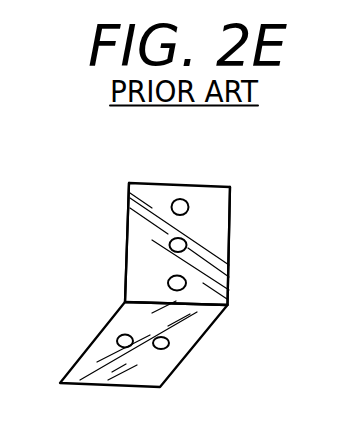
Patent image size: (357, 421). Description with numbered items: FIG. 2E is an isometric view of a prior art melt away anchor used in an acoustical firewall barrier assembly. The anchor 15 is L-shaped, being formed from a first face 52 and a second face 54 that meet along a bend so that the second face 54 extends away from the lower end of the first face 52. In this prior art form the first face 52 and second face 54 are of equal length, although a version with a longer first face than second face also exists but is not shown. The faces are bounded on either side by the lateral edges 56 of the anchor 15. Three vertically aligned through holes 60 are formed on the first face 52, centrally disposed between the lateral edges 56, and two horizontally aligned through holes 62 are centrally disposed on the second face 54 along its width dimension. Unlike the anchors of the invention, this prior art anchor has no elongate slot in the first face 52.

The L-shaped anchor 15 is at (159, 262).
The first face 52 is at (231, 222).
The second face 54 is at (187, 330).
The lateral edges 56 is at (128, 218).
The through holes 60 is at (182, 200).
The through holes 62 is at (121, 334).